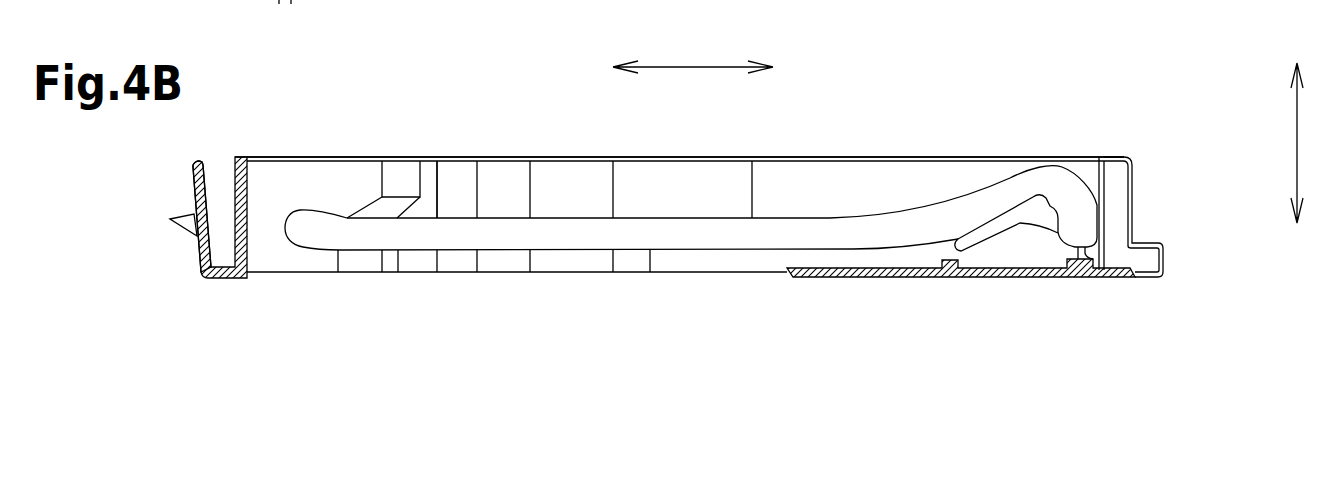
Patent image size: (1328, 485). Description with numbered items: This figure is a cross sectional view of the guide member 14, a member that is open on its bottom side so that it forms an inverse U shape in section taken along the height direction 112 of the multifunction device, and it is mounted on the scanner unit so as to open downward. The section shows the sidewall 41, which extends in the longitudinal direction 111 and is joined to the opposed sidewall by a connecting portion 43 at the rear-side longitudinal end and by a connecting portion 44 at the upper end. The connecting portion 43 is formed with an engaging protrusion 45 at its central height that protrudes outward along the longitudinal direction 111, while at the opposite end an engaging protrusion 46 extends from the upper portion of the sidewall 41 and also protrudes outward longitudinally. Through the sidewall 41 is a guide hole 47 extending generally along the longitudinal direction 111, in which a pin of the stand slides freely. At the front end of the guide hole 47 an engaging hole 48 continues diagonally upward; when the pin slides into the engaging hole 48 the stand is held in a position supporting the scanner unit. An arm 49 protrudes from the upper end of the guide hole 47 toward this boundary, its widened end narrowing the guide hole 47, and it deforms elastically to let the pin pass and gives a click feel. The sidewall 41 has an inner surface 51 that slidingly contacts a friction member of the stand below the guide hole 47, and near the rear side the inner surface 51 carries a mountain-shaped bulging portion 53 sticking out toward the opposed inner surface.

The guide member 14 is at (396, 321).
The sidewall 41 is at (598, 300).
The connecting portion 43 is at (222, 282).
The connecting portion 44 is at (878, 280).
The engaging protrusion 45 is at (177, 215).
The engaging protrusion 46 is at (1165, 258).
The guide hole 47 is at (546, 204).
The engaging hole 48 is at (1079, 217).
The arm 49 is at (1013, 210).
The inner surface 51 is at (709, 172).
The bulging portion 53 is at (437, 175).
The longitudinal direction 111 is at (693, 66).
The height direction 112 is at (1296, 145).